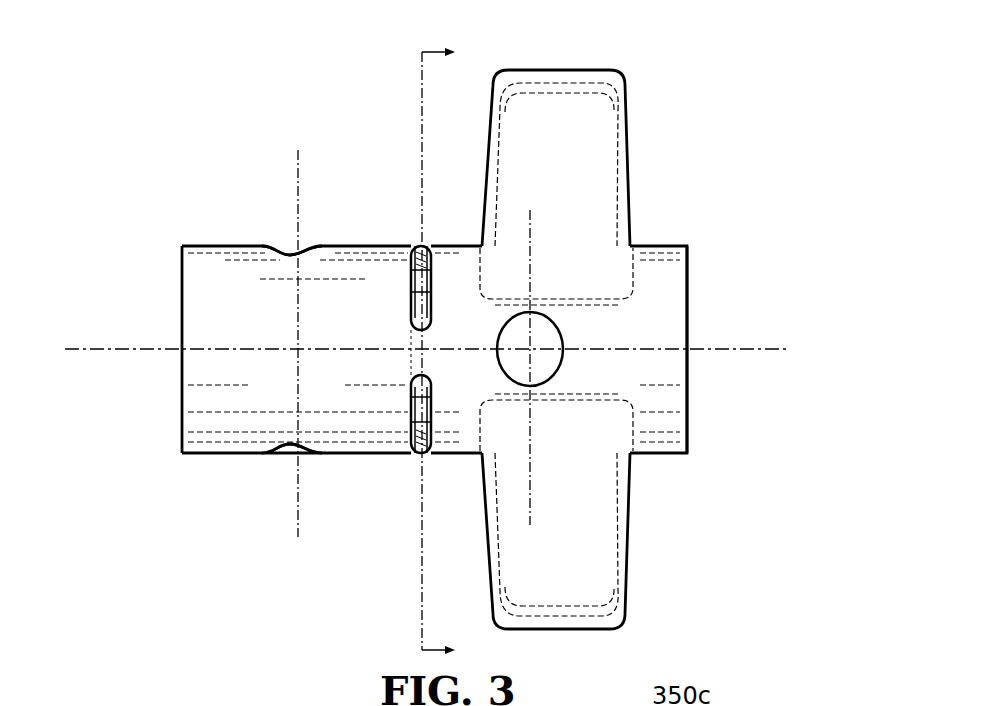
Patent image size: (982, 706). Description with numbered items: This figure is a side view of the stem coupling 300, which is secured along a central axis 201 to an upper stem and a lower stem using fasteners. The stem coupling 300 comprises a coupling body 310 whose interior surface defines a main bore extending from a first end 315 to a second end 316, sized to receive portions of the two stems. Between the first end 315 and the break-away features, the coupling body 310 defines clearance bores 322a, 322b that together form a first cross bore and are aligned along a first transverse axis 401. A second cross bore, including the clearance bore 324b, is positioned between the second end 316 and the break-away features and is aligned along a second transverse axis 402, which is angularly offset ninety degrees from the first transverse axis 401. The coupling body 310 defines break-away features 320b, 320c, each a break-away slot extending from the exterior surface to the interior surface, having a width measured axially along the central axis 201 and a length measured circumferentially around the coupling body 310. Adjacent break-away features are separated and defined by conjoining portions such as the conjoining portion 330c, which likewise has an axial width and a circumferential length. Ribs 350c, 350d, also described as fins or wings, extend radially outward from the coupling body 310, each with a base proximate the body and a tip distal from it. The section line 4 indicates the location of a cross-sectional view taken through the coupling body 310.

The stem coupling 300 is at (241, 116).
The central axis 201 is at (750, 349).
The section line 4- 4 is at (447, 353).
The first transverse axis 401 is at (298, 537).
The second transverse axis 402 is at (532, 350).
The coupling body 310 is at (237, 430).
The first end 315 is at (182, 300).
The second end 316 is at (687, 402).
The clearance bore 322a is at (280, 250).
The clearance bore 322b is at (283, 453).
The break-away feature 320b is at (412, 285).
The break-away feature 320c is at (413, 392).
The conjoining portion 330c is at (417, 342).
The clearance bore 324b is at (540, 345).
The rib 350c is at (600, 168).
The rib 350d is at (593, 530).